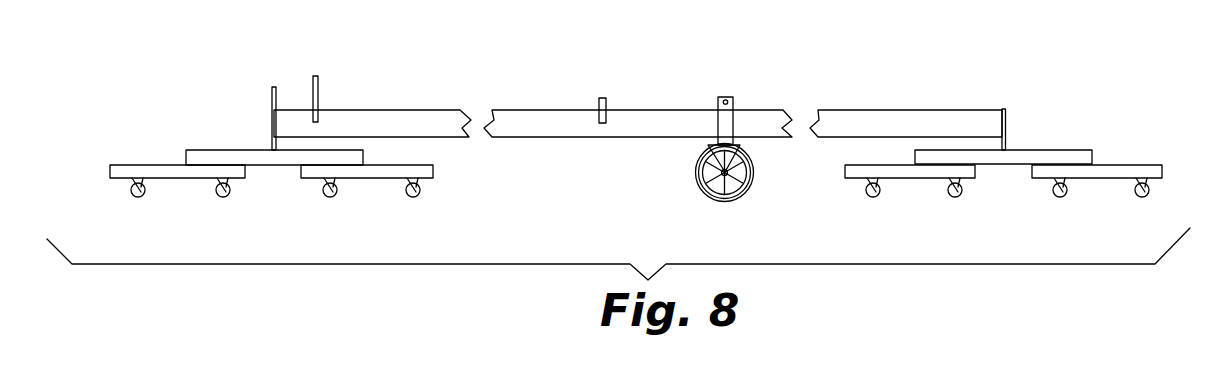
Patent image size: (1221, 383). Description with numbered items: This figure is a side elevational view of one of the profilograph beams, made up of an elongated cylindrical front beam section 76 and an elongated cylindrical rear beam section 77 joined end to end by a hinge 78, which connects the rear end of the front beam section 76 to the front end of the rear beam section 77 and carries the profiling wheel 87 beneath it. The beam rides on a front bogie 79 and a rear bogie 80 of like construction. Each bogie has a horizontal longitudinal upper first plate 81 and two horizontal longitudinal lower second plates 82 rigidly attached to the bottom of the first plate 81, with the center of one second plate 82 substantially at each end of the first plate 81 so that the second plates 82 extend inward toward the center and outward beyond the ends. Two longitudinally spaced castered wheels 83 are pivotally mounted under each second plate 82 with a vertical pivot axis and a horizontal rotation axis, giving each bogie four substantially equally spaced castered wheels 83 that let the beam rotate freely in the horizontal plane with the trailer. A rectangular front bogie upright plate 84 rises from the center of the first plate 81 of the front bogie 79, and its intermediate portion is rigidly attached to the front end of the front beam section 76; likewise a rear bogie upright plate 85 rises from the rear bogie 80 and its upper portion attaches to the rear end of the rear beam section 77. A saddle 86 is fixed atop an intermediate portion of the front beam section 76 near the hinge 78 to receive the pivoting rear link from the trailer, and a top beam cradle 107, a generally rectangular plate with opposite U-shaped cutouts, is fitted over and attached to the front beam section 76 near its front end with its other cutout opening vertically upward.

The front beam section 76 is at (428, 110).
The rear beam section 77 is at (818, 110).
The hinge 78 is at (725, 102).
The front bogie 79 is at (301, 162).
The rear bogie 80 is at (1003, 154).
The first plate 81 is at (233, 148).
The second plates 82 is at (165, 167).
The castered wheels 83 is at (140, 193).
The front bogie upright plate 84 is at (270, 102).
The rear bogie upright plate 85 is at (1004, 127).
The saddle 86 is at (606, 95).
The profiling wheel 87 is at (710, 188).
The top beam cradle 107 is at (320, 97).